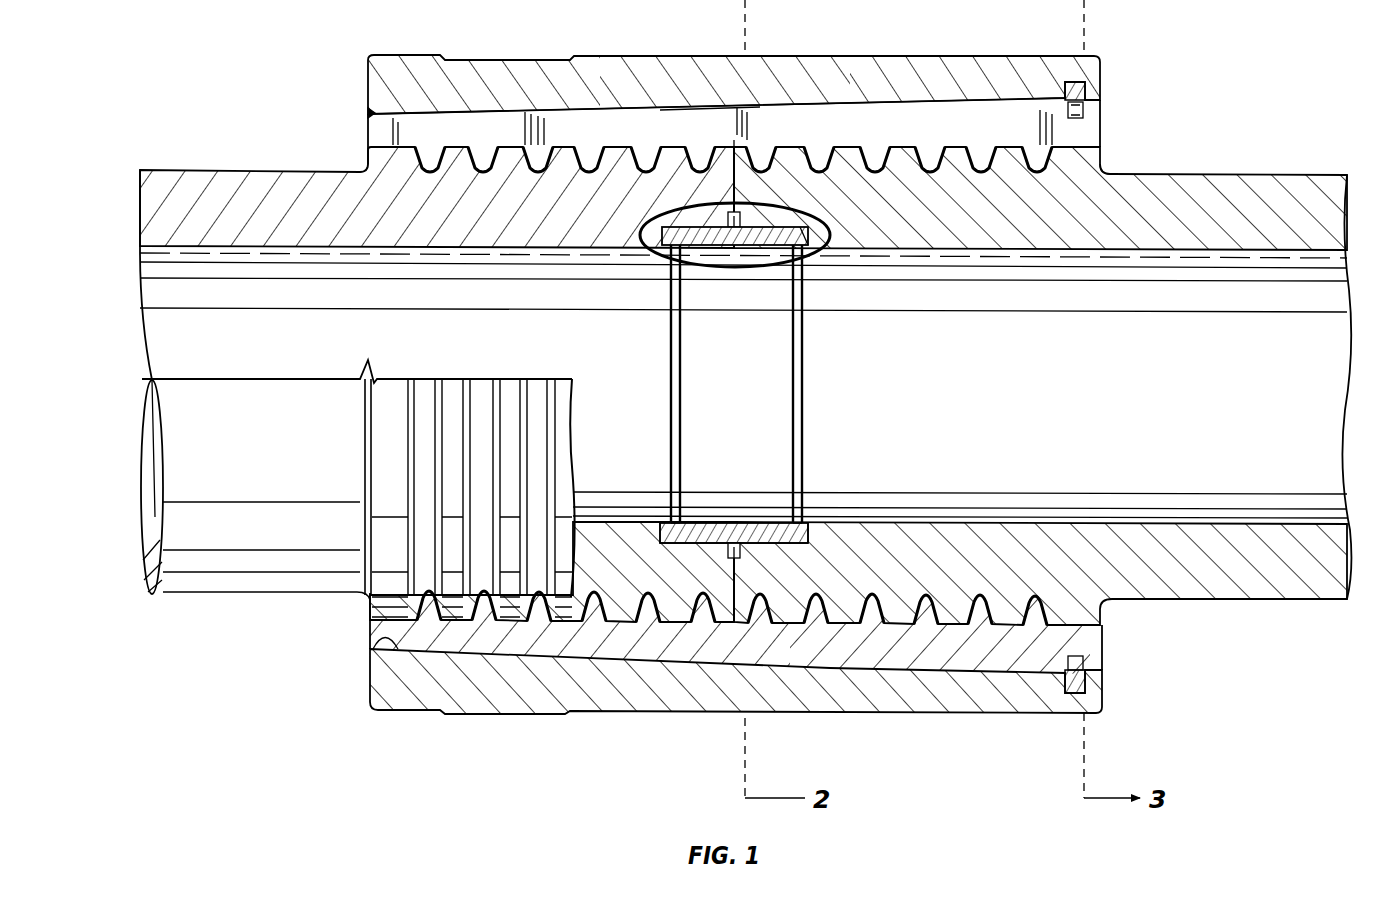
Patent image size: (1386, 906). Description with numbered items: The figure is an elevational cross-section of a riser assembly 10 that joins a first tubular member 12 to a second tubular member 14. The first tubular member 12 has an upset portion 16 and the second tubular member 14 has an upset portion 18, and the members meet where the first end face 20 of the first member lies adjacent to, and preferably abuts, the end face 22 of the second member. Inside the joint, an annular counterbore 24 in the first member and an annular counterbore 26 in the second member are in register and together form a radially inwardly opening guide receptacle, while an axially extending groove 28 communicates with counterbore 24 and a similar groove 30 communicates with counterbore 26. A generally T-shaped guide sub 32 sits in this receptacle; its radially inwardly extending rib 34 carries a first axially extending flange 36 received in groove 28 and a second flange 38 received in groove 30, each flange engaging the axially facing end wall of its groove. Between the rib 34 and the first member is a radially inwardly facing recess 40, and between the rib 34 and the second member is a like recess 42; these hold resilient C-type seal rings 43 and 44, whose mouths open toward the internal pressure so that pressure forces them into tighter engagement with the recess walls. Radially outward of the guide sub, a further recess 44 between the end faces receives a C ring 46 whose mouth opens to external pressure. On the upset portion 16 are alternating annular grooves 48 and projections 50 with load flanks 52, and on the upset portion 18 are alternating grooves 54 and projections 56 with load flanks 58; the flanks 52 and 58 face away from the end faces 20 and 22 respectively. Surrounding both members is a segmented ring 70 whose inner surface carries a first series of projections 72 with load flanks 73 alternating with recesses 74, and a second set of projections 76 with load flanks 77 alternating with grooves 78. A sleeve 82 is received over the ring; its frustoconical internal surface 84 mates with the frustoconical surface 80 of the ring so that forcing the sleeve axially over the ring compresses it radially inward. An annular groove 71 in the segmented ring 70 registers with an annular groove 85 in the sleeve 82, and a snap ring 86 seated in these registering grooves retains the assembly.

The riser assembly 10 is at (815, 205).
The first tubular member 12 is at (193, 152).
The second tubular member 14 is at (1300, 158).
The upset portion 16 is at (370, 165).
The upset portion 18 is at (1110, 172).
The first end face 20 is at (742, 170).
The end face 22 is at (728, 168).
The annular counterbore 24 is at (700, 250).
The annular counterbore 26 is at (768, 250).
The annular axially extending groove 28 is at (660, 540).
The annular axially extending groove 30 is at (810, 538).
The guide sub 32 is at (705, 512).
The annular radially inwardly extending rib 34 is at (738, 522).
The first annular axially extending flange 36 is at (670, 542).
The second annular axially extending flange 38 is at (800, 542).
The annular radially inwardly facing recess 40 is at (660, 525).
The annular radially inwardly facing recess 42 is at (808, 525).
The resilient seal ring 43 is at (660, 247).
The resilient seal ring 44 is at (815, 247).
The C ring 46 is at (752, 600).
The annular grooves 48 is at (440, 178).
The annular projections 50 is at (450, 175).
The load flanks 52 is at (460, 143).
The annular grooves 54 is at (1000, 215).
The annular projections 56 is at (968, 165).
The load flanks 58 is at (873, 147).
The segmented ring 70 is at (676, 126).
The annular groove 71 is at (1088, 110).
The annular projections 72 is at (590, 621).
The load flanks 73 is at (518, 145).
The annular recesses 74 is at (680, 112).
The annular projections 76 is at (762, 157).
The load flanks 77 is at (873, 617).
The annular grooves 78 is at (845, 143).
The frustoconical surface 80 is at (383, 86).
The sleeve 82 is at (968, 43).
The frustoconical internal surface 84 is at (370, 637).
The annular groove 85 is at (1075, 693).
The snap ring 86 is at (1088, 82).